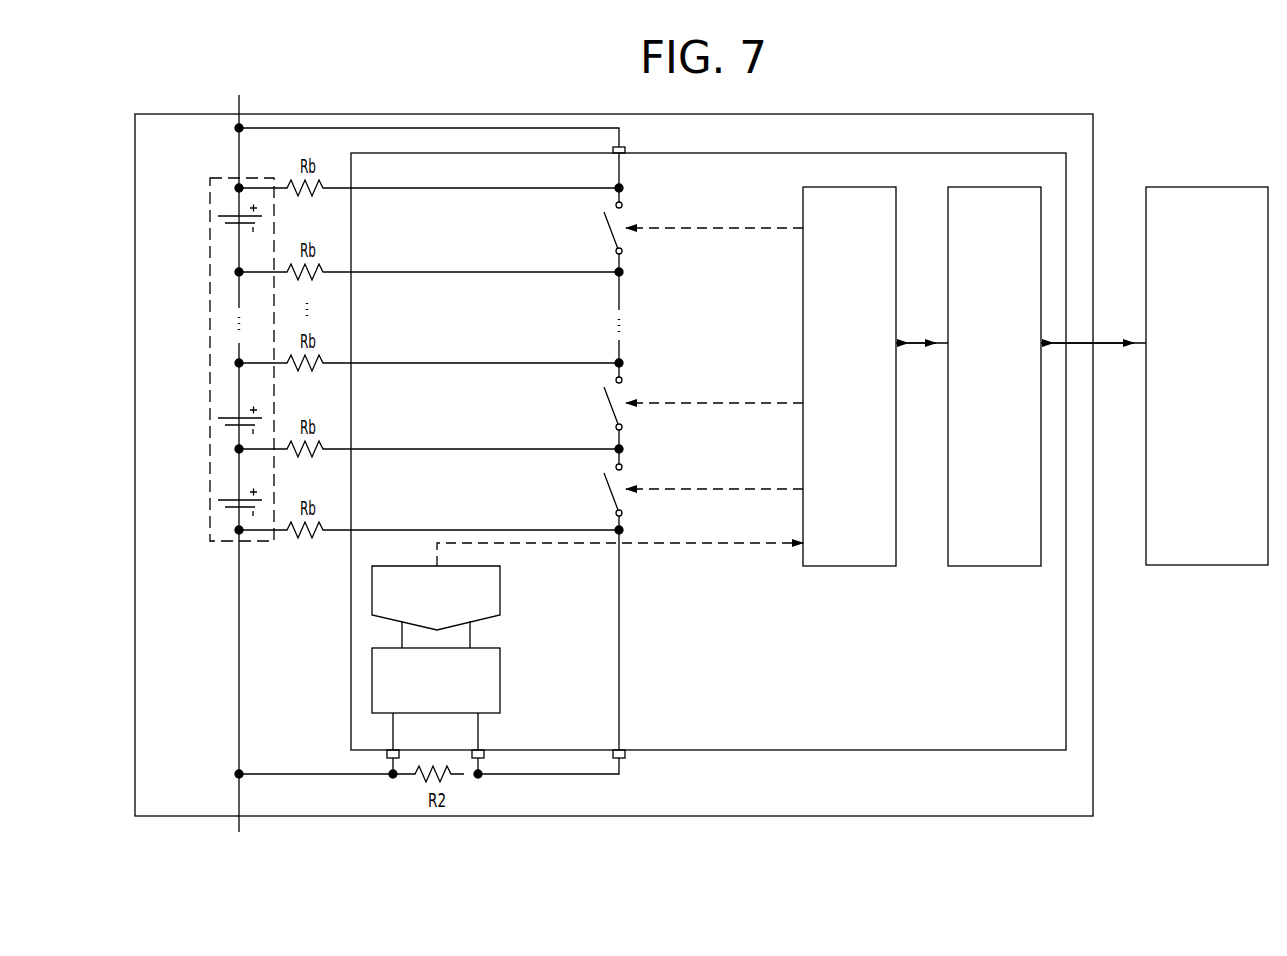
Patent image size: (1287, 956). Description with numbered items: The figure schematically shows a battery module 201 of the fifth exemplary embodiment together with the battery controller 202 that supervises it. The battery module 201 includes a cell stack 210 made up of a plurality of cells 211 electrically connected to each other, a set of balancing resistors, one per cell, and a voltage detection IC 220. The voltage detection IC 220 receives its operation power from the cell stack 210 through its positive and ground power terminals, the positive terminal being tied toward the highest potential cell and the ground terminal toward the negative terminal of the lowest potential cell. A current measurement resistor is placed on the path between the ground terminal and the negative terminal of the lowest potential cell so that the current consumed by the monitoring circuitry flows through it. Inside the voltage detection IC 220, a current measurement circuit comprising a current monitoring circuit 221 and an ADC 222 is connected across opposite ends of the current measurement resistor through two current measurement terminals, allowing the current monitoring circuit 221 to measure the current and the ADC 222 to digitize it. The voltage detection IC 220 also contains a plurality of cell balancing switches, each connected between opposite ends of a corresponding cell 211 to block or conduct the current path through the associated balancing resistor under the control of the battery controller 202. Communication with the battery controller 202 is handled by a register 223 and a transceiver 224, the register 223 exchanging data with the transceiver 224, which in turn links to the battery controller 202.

The battery module 201 is at (1067, 114).
The battery controller 202 is at (1207, 187).
The cell stack 210 is at (210, 316).
The cell 211 is at (218, 215).
The voltage detection IC 220 is at (698, 153).
The current monitoring circuit 221 is at (500, 681).
The ADC 222 is at (500, 589).
The register 223 is at (845, 187).
The transceiver 224 is at (993, 187).